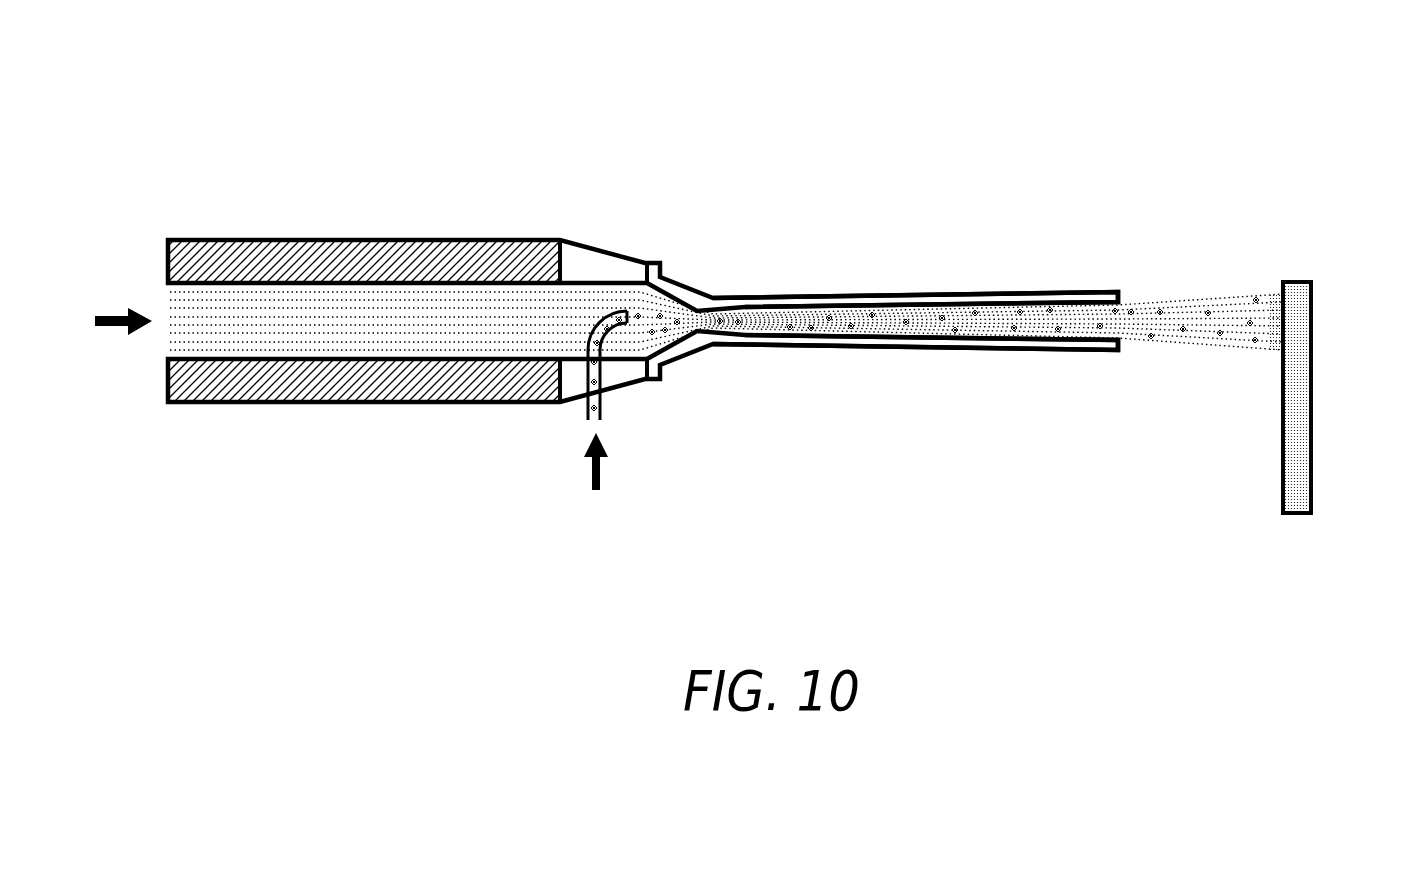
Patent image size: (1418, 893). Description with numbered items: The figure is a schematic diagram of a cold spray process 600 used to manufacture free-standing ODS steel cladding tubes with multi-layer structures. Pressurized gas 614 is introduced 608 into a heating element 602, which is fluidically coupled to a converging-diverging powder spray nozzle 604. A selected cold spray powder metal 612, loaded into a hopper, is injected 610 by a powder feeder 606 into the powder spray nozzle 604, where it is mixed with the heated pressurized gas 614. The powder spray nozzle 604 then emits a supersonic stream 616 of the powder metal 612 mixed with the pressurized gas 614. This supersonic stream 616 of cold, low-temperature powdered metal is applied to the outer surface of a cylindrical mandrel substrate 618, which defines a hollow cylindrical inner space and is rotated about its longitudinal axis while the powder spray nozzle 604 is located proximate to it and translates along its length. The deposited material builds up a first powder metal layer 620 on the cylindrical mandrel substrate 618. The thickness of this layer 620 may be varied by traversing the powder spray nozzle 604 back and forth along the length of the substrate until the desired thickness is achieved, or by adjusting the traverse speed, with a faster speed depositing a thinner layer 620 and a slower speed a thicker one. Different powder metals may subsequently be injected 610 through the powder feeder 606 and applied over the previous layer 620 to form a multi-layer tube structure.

The cold spray process 600 is at (648, 56).
The heating element 602 is at (348, 238).
The powder spray nozzle 604 is at (888, 292).
The powder feeder 606 is at (588, 402).
The introduction of pressurized gas 608 is at (113, 310).
The injection of powder metal 610 is at (605, 472).
The cold spray powder metal 612 is at (850, 327).
The pressurized gas 614 is at (182, 332).
The supersonic stream 616 is at (1163, 303).
The cylindrical mandrel substrate 618 is at (1297, 283).
The first powder metal layer 620 is at (1275, 350).